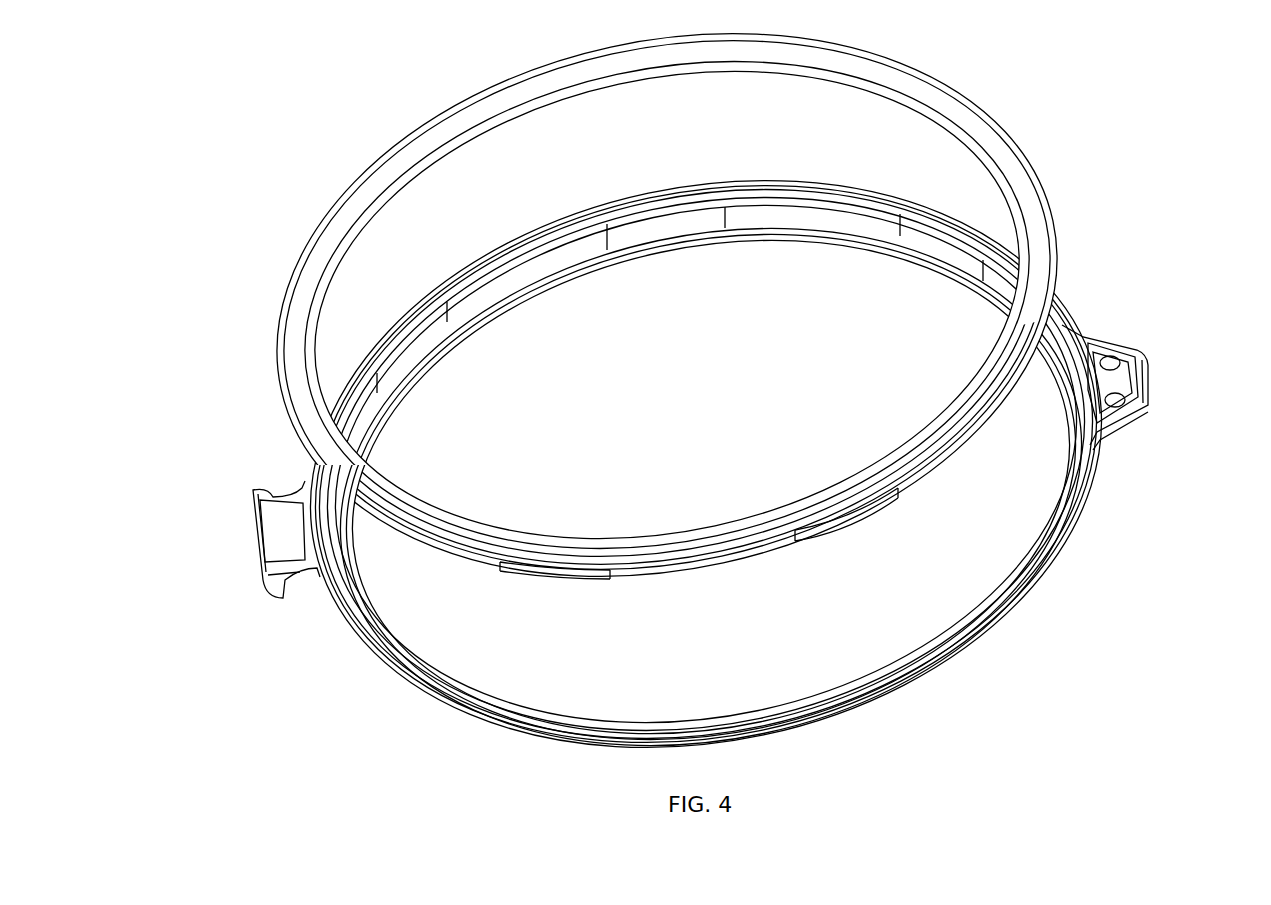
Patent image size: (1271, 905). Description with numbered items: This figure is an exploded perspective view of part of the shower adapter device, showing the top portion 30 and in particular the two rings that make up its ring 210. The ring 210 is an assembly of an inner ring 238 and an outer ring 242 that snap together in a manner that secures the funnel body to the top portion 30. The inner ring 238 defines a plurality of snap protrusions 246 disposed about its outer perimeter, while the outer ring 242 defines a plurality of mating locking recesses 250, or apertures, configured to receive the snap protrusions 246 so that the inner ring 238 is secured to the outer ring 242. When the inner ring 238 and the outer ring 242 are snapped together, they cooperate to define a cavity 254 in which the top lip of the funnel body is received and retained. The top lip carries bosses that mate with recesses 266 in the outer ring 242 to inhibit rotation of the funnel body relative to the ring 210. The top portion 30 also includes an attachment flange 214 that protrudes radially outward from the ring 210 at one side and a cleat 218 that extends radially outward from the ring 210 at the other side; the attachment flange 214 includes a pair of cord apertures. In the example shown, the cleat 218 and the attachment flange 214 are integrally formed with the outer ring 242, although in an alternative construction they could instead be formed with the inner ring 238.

The ring 210 is at (689, 409).
The top portion 30 is at (694, 436).
The inner ring 238 is at (713, 323).
The outer ring 242 is at (666, 436).
The snap protrusions 246 is at (877, 503).
The locking recesses 250 is at (835, 192).
The cavity 254 is at (878, 232).
The recesses 266 is at (415, 345).
The attachment flange 214 is at (1142, 378).
The cleat 218 is at (258, 545).